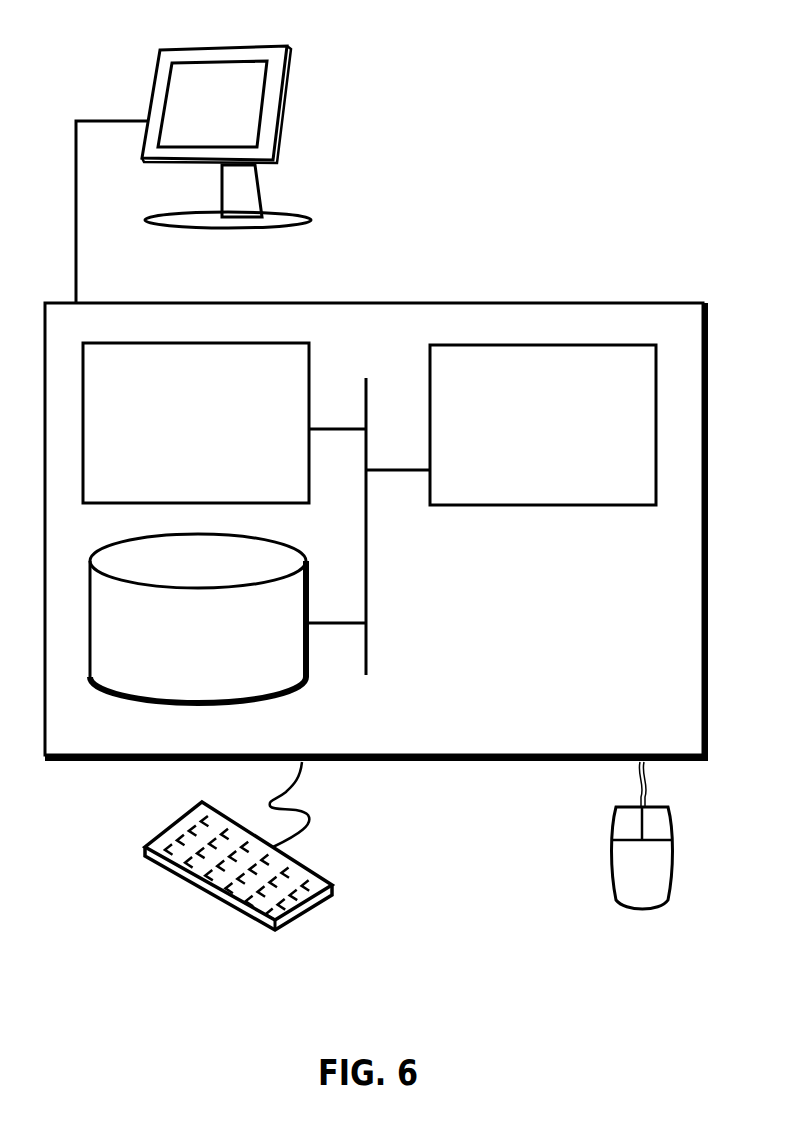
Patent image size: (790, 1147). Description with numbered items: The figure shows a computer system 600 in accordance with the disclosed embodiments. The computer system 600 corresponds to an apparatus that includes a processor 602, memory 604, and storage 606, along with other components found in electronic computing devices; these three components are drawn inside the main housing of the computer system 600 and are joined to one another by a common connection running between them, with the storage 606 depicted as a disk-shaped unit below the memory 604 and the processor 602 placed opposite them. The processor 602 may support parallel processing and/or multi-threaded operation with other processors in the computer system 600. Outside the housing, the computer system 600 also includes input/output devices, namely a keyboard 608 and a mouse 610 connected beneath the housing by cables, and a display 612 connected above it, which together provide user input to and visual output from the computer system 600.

The computer system 600 is at (421, 280).
The processor 602 is at (568, 439).
The memory 604 is at (217, 434).
The storage 606 is at (224, 648).
The keyboard 608 is at (163, 862).
The mouse 610 is at (662, 880).
The display 612 is at (193, 174).